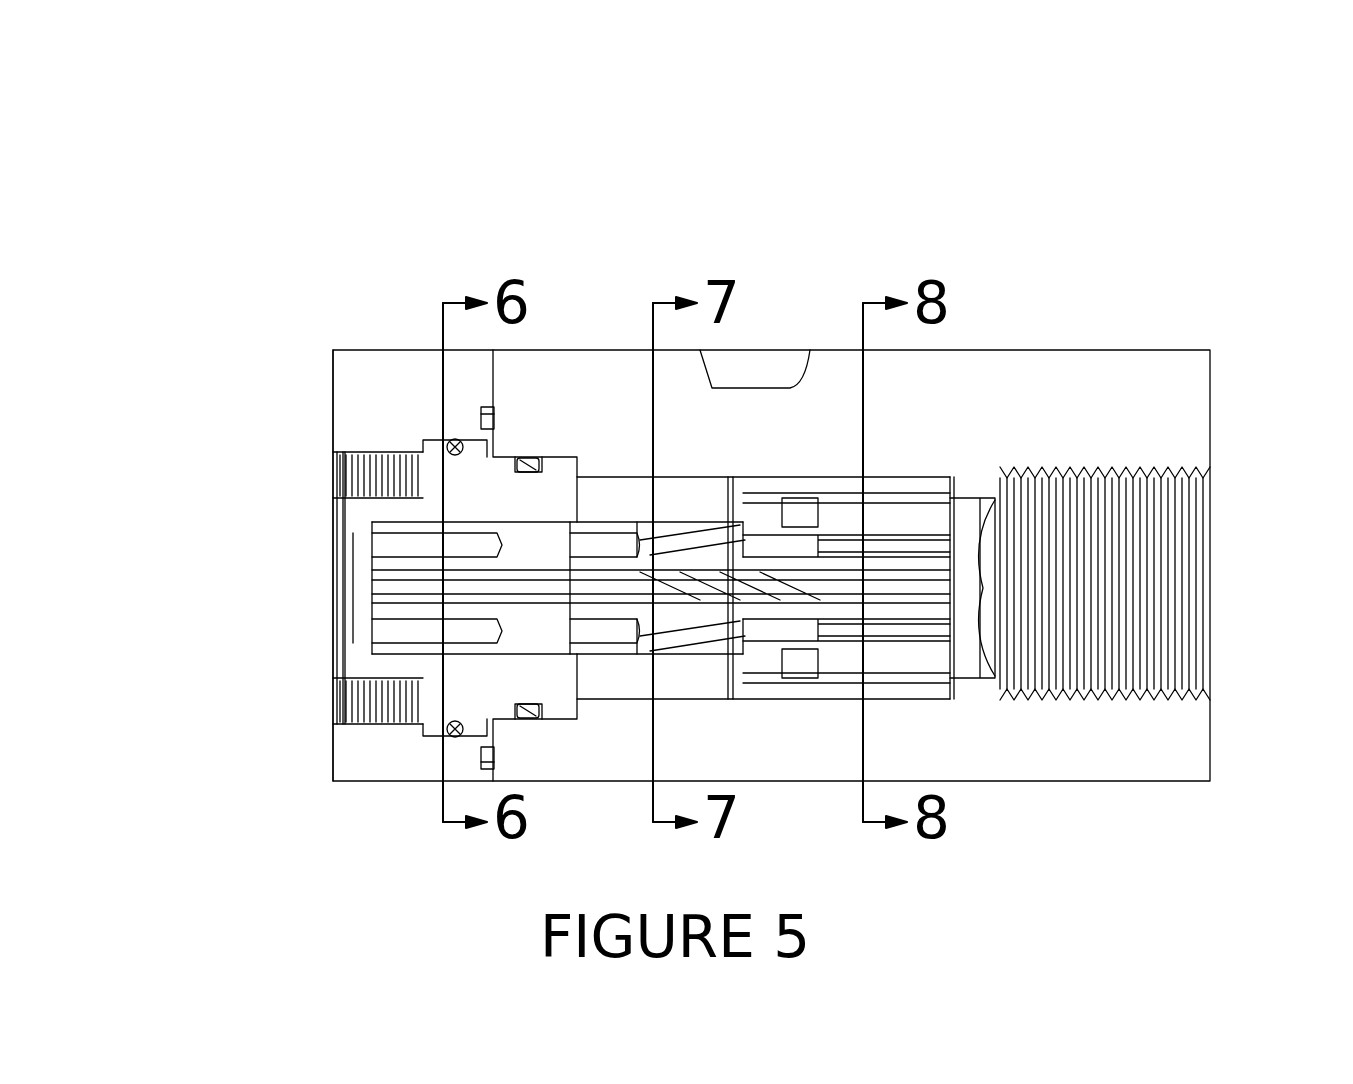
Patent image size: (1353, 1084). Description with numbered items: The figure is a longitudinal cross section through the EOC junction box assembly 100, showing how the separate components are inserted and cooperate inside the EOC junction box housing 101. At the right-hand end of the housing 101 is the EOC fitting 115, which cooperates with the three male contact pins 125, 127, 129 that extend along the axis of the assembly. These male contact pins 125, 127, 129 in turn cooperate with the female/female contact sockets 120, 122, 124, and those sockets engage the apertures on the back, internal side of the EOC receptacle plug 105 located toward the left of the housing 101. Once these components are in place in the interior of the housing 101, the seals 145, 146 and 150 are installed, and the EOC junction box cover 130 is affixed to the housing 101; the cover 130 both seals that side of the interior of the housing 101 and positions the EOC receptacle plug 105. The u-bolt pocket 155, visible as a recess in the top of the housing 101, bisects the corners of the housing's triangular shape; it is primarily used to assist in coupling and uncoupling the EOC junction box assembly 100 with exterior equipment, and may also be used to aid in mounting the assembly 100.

The EOC junction box assembly 100 is at (381, 283).
The EOC junction box housing 101 is at (1150, 727).
The EOC receptacle plug 105 is at (463, 497).
The EOC fitting 115 is at (887, 487).
The female/female contact socket 120 is at (683, 527).
The female/female contact socket 122 is at (846, 375).
The female/female contact socket 124 is at (864, 372).
The male contact pin 125 is at (686, 545).
The male contact pin 127 is at (738, 743).
The male contact pin 129 is at (773, 766).
The EOC junction box cover 130 is at (380, 373).
The seal 145 is at (445, 441).
The seal 146 is at (485, 760).
The seal 150 is at (533, 697).
The u-bolt pocket 155 is at (725, 365).